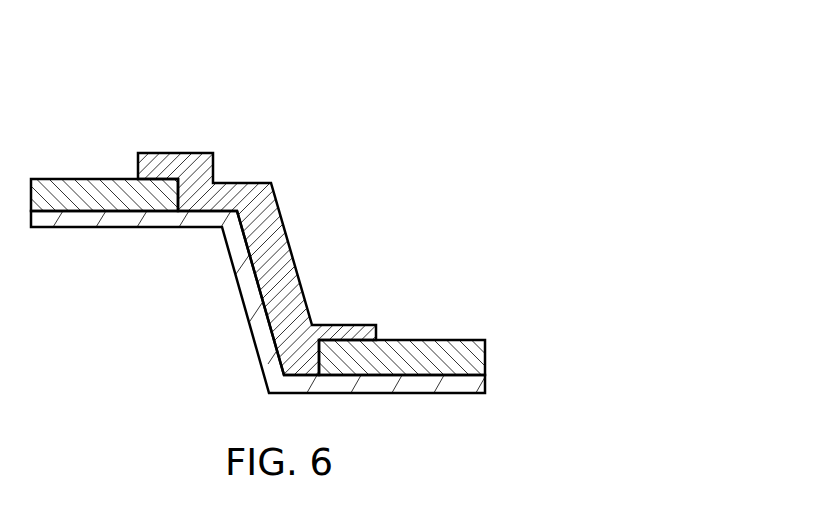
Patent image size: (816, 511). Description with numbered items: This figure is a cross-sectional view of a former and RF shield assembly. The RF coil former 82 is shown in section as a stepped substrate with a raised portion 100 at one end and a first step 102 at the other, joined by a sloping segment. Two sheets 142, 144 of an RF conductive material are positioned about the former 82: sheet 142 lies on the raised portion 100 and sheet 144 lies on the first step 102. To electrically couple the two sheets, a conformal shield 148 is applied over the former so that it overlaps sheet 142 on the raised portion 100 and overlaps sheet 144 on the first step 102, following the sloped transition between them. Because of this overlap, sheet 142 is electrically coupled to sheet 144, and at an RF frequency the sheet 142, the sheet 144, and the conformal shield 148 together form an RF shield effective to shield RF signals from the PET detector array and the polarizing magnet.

The raised portion 100 is at (296, 218).
The first step 102 is at (296, 242).
The RF coil former 82 is at (123, 229).
The sheet 142 is at (114, 178).
The sheet 144 is at (447, 340).
The conformal shield 148 is at (245, 183).